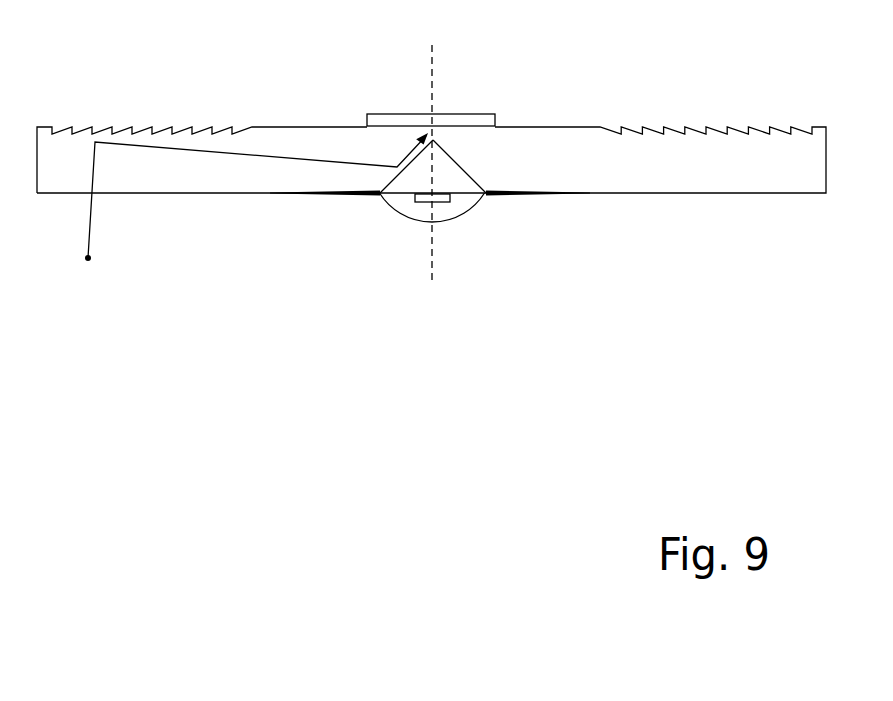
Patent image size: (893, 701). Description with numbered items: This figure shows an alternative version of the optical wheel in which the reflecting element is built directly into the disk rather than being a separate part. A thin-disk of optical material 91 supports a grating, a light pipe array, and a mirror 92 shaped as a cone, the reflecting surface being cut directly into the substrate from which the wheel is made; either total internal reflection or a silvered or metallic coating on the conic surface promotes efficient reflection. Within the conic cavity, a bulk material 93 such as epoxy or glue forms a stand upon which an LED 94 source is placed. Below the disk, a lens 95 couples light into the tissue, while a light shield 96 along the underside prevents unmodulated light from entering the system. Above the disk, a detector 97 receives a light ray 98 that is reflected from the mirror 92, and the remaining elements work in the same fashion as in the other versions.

The thin-disk of optical material 91 is at (562, 140).
The mirror 92 is at (472, 178).
The bulk material 93 is at (415, 175).
The LED 94 is at (445, 200).
The lens 95 is at (443, 225).
The light shield 96 is at (503, 199).
The detector 97 is at (400, 118).
The light ray 98 is at (270, 157).